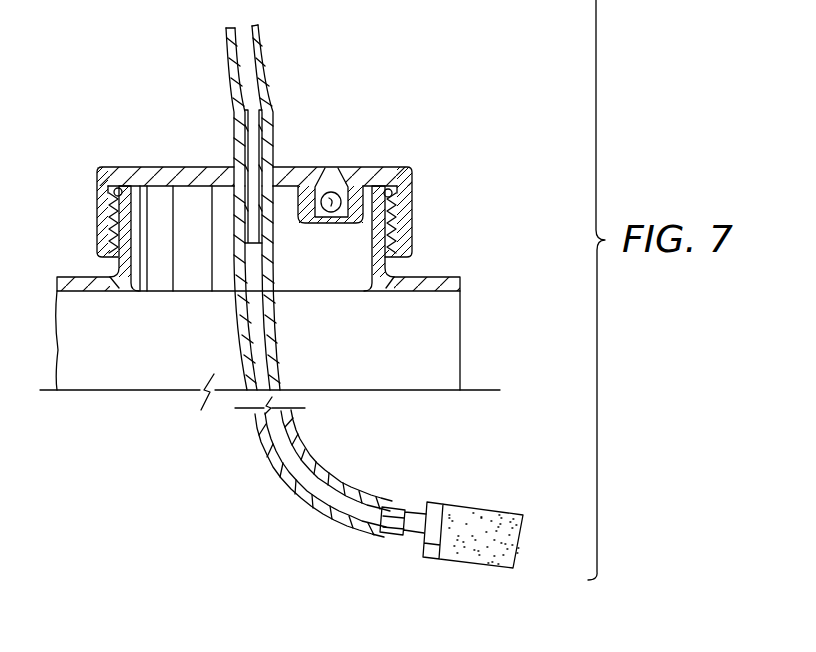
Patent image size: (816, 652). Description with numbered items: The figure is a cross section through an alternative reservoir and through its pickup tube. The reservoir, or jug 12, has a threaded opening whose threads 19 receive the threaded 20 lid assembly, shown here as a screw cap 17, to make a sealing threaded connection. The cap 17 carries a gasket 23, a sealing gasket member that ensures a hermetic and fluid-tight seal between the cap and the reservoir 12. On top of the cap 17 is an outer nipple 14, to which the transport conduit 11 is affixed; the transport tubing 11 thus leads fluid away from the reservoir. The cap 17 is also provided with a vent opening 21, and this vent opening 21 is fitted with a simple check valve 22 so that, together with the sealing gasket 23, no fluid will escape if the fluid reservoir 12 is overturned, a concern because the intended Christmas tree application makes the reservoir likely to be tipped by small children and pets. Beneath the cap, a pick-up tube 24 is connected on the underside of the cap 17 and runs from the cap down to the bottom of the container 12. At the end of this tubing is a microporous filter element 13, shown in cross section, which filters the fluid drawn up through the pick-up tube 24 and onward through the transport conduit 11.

The transport conduit 11 is at (257, 41).
The jug 12 is at (461, 288).
The microporous filter element 13 is at (482, 558).
The outer nipple 14 is at (253, 128).
The threaded cap 17 is at (356, 172).
The threads 19 is at (394, 218).
The threaded lid assembly 20 is at (401, 245).
The vent opening 21 is at (156, 167).
The check valve 22 is at (335, 213).
The gasket 23 is at (113, 190).
The pick-up tube 24 is at (240, 349).